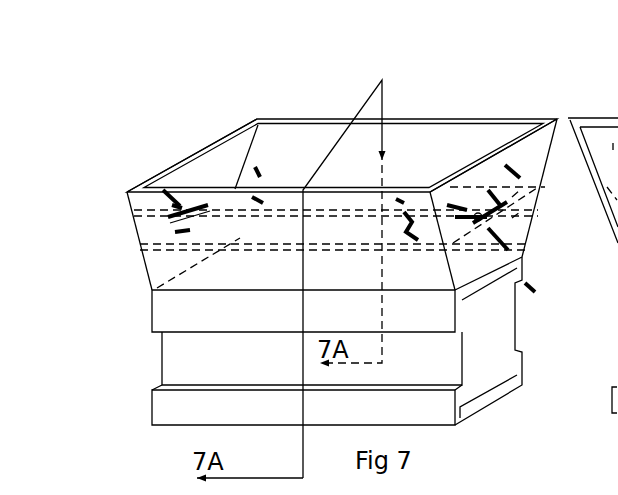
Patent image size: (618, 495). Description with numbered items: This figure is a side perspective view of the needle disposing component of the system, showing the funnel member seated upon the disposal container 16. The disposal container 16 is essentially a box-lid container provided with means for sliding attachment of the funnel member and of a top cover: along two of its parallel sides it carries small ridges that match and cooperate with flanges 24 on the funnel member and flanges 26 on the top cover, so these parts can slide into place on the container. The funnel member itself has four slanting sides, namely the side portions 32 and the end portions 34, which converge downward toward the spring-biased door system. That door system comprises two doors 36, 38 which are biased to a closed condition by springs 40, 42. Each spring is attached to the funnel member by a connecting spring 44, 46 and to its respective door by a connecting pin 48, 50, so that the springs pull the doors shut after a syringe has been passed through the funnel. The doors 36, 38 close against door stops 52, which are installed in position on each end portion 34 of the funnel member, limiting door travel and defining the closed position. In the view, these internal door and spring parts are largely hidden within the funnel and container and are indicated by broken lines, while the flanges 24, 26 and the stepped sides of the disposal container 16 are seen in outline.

The disposal container 16 is at (523, 337).
The flanges 24 is at (502, 288).
The flanges 26 is at (466, 388).
The side portions 32 is at (302, 190).
The end portions 34 is at (154, 177).
The door 36 is at (363, 240).
The door 38 is at (467, 203).
The spring 40 is at (171, 160).
The spring 42 is at (254, 200).
The connecting spring 44 is at (124, 190).
The connecting spring 46 is at (256, 163).
The connecting pin 48 is at (142, 243).
The connecting pin 50 is at (300, 128).
The door stops 52 is at (168, 219).